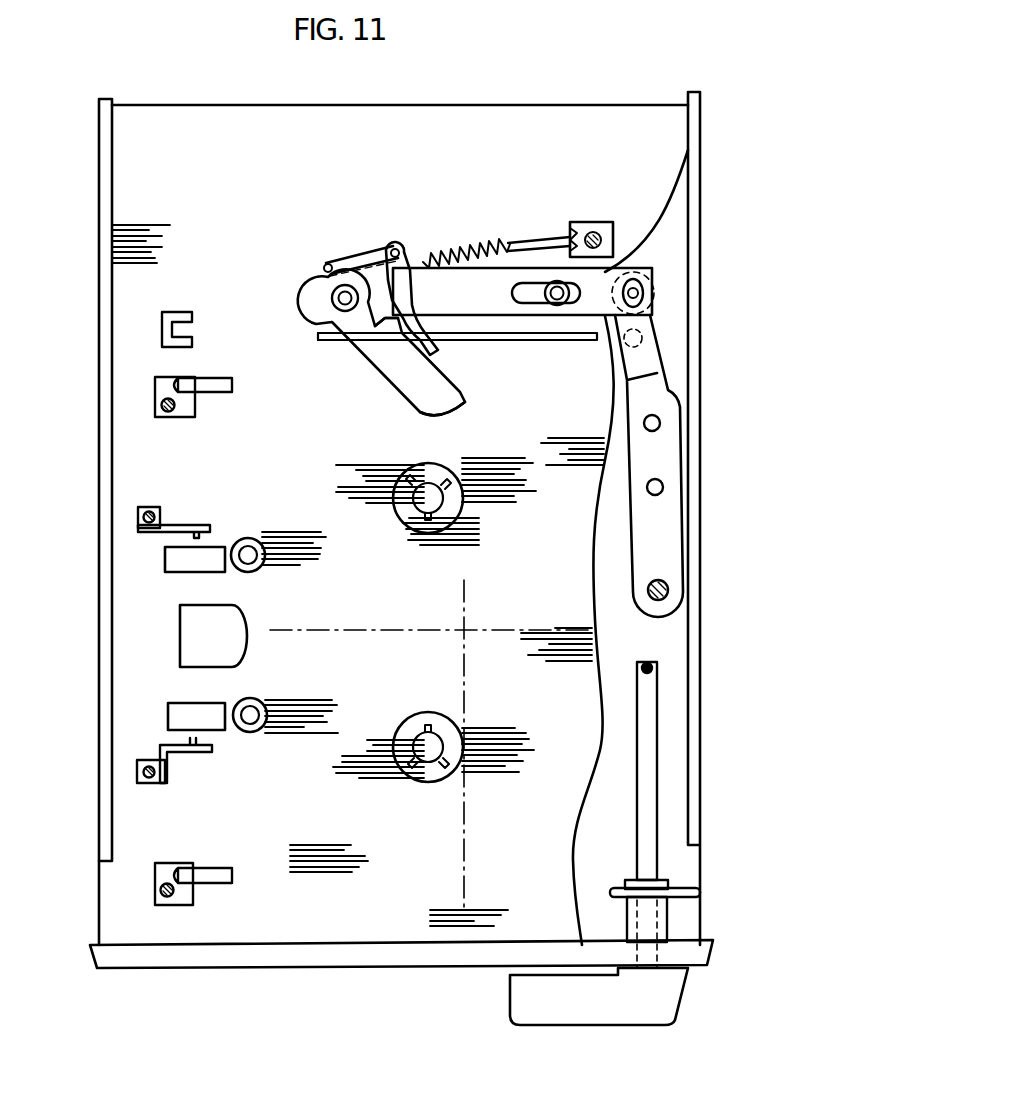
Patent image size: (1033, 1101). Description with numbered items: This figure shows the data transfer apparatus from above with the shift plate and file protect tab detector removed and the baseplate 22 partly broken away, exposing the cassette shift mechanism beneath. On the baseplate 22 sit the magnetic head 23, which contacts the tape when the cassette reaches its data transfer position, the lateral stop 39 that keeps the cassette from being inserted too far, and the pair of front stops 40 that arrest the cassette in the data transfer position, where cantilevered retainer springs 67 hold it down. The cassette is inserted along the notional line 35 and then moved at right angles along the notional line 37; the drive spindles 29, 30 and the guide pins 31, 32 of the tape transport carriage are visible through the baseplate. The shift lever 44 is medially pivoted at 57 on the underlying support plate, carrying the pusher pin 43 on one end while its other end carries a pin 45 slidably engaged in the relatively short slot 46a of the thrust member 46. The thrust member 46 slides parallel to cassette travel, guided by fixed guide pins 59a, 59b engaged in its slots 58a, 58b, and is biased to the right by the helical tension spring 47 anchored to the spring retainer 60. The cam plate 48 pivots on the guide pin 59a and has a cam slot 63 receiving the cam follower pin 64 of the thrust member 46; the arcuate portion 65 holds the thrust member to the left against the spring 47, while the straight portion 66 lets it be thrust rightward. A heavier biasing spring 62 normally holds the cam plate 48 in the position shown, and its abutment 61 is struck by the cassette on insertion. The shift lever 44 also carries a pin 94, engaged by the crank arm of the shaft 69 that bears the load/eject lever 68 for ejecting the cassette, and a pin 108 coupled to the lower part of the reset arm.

The baseplate 22 is at (584, 105).
The magnetic head 23 is at (180, 636).
The drive spindle 29 is at (430, 520).
The drive spindle 30 is at (428, 782).
The guide pin 31 is at (252, 550).
The guide pin 32 is at (254, 708).
The notional line 35 is at (468, 880).
The notional line 37 is at (368, 628).
The lateral stop 39 is at (318, 337).
The front stop 40 is at (165, 562).
The pusher pin 43 is at (668, 590).
The shift lever 44 is at (675, 548).
The pin 45 is at (644, 298).
The thrust member 46 is at (600, 270).
The slot 46a is at (650, 292).
The helical tension spring 47 is at (447, 258).
The cam plate 48 is at (410, 385).
The pivot 57 is at (660, 420).
The slot 58a is at (315, 296).
The slot 58b is at (532, 303).
The guide pin 59a is at (330, 302).
The guide pin 59b is at (558, 306).
The spring retainer 60 is at (570, 222).
The abutment 61 is at (446, 406).
The biasing spring 62 is at (515, 243).
The cam slot 63 is at (385, 340).
The cam follower pin 64 is at (390, 295).
The arcuate portion 65 is at (430, 345).
The straight portion 66 is at (390, 362).
The retainer spring 67 is at (218, 395).
The load/eject lever 68 is at (680, 1003).
The shaft 69 is at (655, 868).
The pin 94 is at (642, 340).
The pin 108 is at (663, 487).